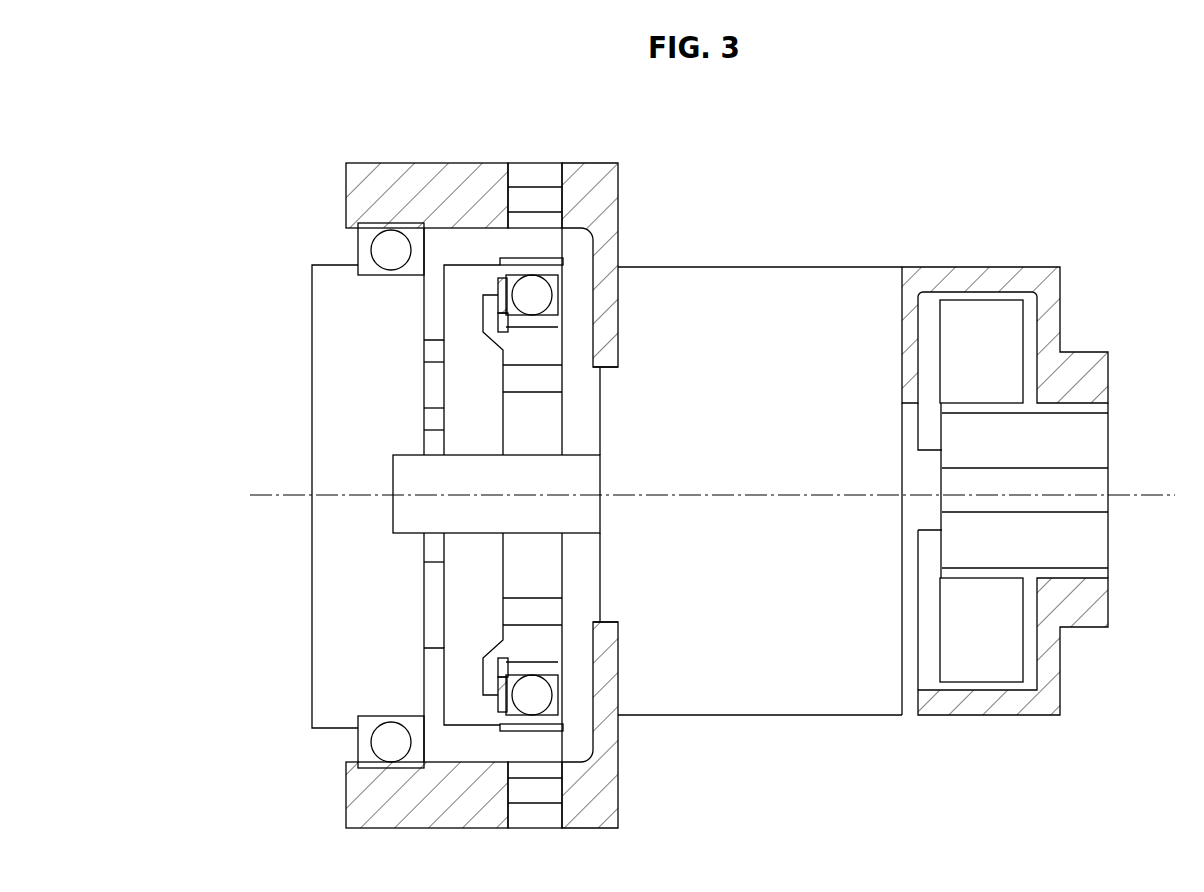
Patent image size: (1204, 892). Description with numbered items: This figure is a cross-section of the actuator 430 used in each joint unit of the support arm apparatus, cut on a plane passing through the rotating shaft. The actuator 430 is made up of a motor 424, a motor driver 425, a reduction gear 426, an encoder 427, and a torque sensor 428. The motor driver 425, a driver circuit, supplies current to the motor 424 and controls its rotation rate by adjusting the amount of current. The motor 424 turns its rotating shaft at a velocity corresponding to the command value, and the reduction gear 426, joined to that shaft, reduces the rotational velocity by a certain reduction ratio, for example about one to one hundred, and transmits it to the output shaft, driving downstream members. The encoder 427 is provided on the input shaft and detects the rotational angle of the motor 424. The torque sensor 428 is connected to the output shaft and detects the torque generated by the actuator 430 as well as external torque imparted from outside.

The motor 424 is at (777, 682).
The motor driver 425 is at (985, 672).
The reduction gear 426 is at (545, 573).
The encoder 427 is at (1088, 538).
The torque sensor 428 is at (347, 608).
The actuator 430 is at (710, 480).